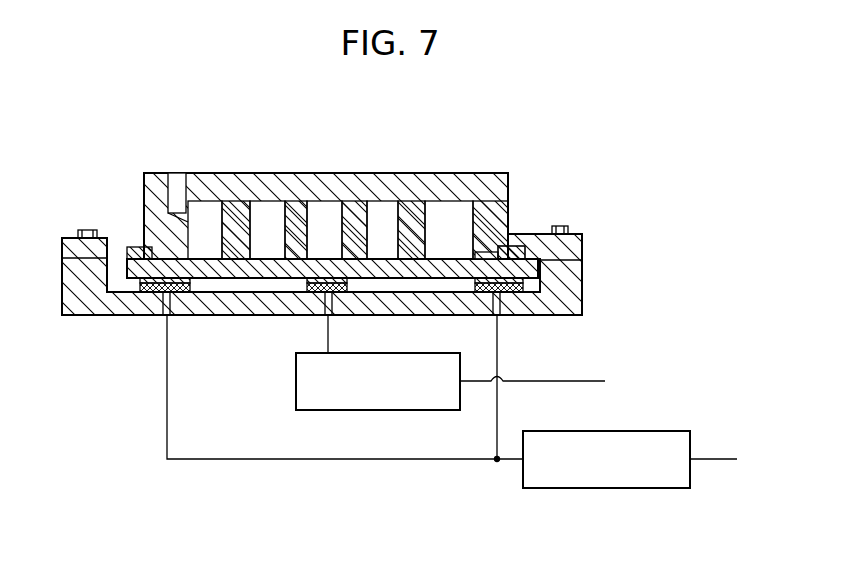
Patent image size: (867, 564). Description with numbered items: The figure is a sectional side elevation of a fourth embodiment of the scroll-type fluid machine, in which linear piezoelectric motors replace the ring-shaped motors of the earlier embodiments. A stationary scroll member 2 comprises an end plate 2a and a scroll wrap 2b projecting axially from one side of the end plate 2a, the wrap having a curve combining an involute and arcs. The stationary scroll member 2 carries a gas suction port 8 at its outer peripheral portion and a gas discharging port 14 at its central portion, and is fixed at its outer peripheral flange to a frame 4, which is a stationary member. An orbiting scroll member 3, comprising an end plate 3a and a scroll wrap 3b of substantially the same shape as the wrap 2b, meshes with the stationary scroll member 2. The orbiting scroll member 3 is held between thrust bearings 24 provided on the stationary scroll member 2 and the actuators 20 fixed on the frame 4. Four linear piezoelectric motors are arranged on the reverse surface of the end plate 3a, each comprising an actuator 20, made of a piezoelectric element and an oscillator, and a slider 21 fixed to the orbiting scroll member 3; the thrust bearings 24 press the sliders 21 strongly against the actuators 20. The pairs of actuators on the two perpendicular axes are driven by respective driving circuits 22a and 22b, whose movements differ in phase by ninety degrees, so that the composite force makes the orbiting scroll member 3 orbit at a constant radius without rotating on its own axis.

The stationary scroll member 2 is at (447, 173).
The end plate 2a is at (473, 192).
The scroll wrap 2b is at (433, 190).
The orbiting scroll member 3 is at (332, 183).
The end plate 3a is at (201, 265).
The scroll wrap 3b is at (238, 230).
The frame 4 is at (98, 310).
The gas suction port 8 is at (178, 188).
The gas discharging port 14 is at (330, 188).
The actuator 20 is at (146, 300).
The slider 21 is at (204, 300).
The driving circuit 22a is at (607, 488).
The driving circuit 22b is at (355, 410).
The thrust bearing 24 is at (520, 246).